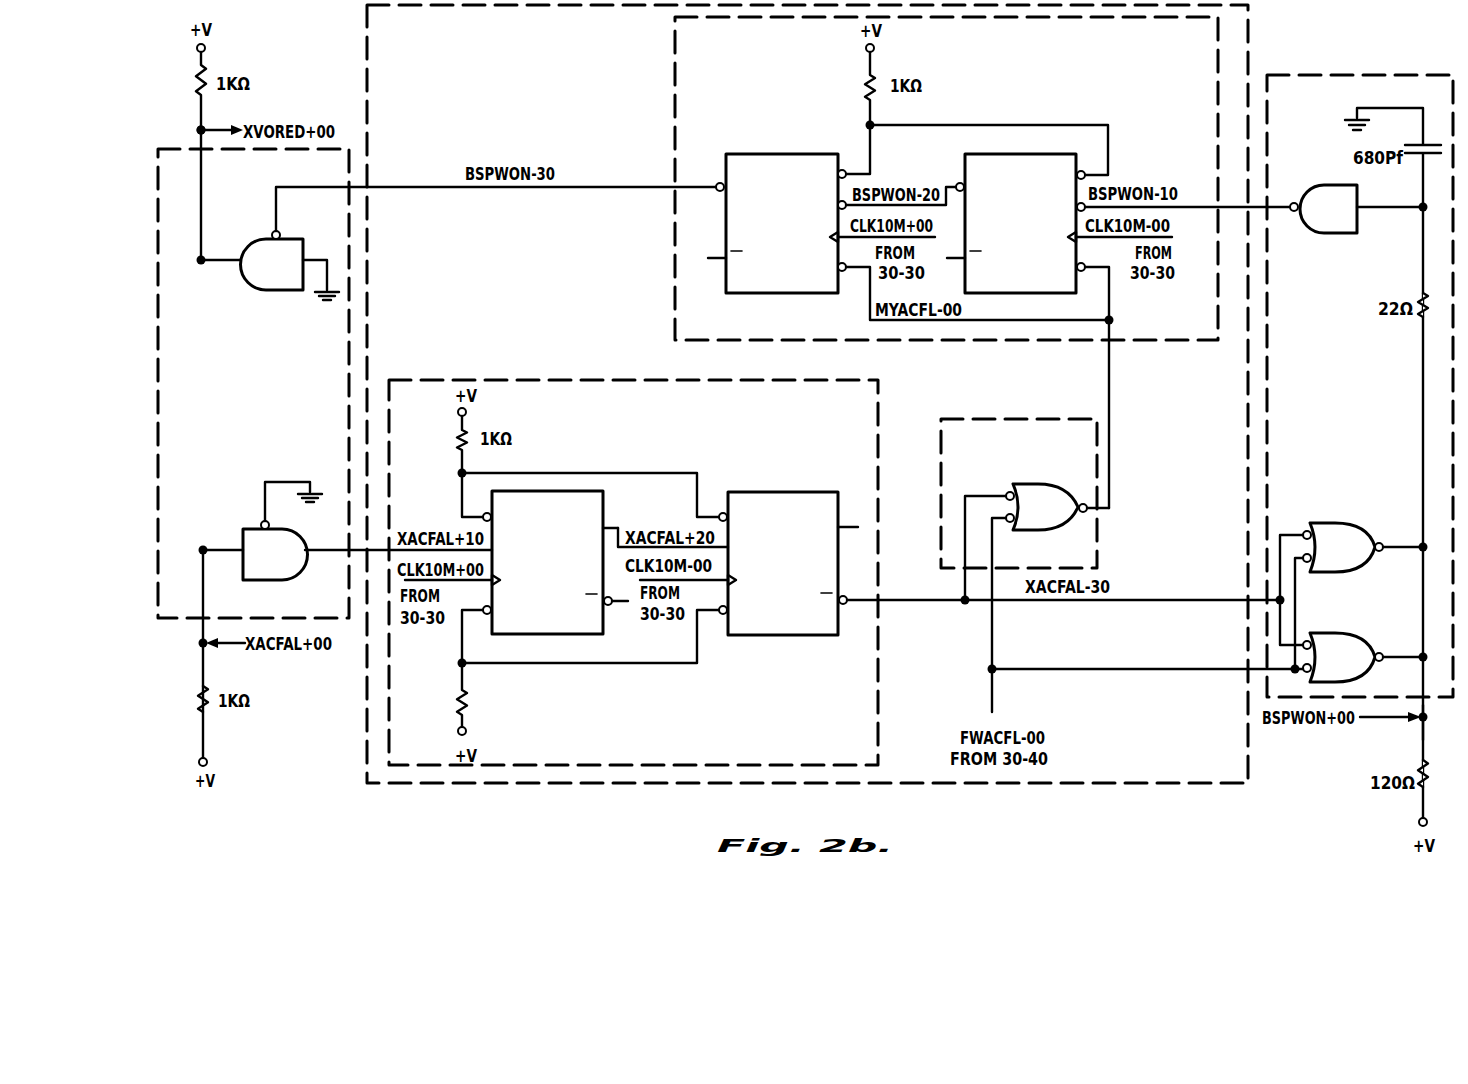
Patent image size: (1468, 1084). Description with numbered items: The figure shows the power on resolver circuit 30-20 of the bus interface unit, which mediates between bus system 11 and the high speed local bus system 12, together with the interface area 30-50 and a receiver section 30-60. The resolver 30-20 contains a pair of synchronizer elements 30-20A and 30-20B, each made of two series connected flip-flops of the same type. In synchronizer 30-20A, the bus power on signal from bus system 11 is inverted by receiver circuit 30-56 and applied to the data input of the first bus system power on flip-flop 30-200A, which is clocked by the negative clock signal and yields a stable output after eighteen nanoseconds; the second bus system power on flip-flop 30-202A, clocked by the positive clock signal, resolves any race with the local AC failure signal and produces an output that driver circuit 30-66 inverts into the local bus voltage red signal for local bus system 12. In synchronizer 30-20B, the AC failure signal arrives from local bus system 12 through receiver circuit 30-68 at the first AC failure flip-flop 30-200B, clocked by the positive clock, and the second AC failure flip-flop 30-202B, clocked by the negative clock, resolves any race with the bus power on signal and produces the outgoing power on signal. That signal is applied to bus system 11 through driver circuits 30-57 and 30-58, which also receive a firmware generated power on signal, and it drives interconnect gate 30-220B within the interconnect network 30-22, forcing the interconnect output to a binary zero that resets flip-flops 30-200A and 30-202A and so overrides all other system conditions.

The bus system 11 is at (1422, 740).
The high speed local bus system 12 is at (200, 118).
The power on resolver circuit 30-20 is at (507, 82).
The synchronizer element 30-20A is at (770, 58).
The synchronizer element 30-20B is at (668, 410).
The interconnect network 30-22 is at (1040, 416).
The interface area 30-50 is at (1372, 381).
The receiver circuit 30-56 is at (1333, 236).
The driver circuit 30-57 is at (1343, 522).
The driver circuit 30-58 is at (1343, 639).
The receiver section 30-60 is at (274, 405).
The driver circuit 30-66 is at (272, 292).
The receiver circuit 30-68 is at (285, 583).
The first bus system power on flip-flop 30-200A is at (1030, 154).
The first bus system AC failure flip-flop 30-200B is at (573, 491).
The second bus system power on flip-flop 30-202A is at (770, 154).
The second bus system AC failure flip-flop 30-202B is at (770, 492).
The interconnect gate 30-220B is at (1041, 531).